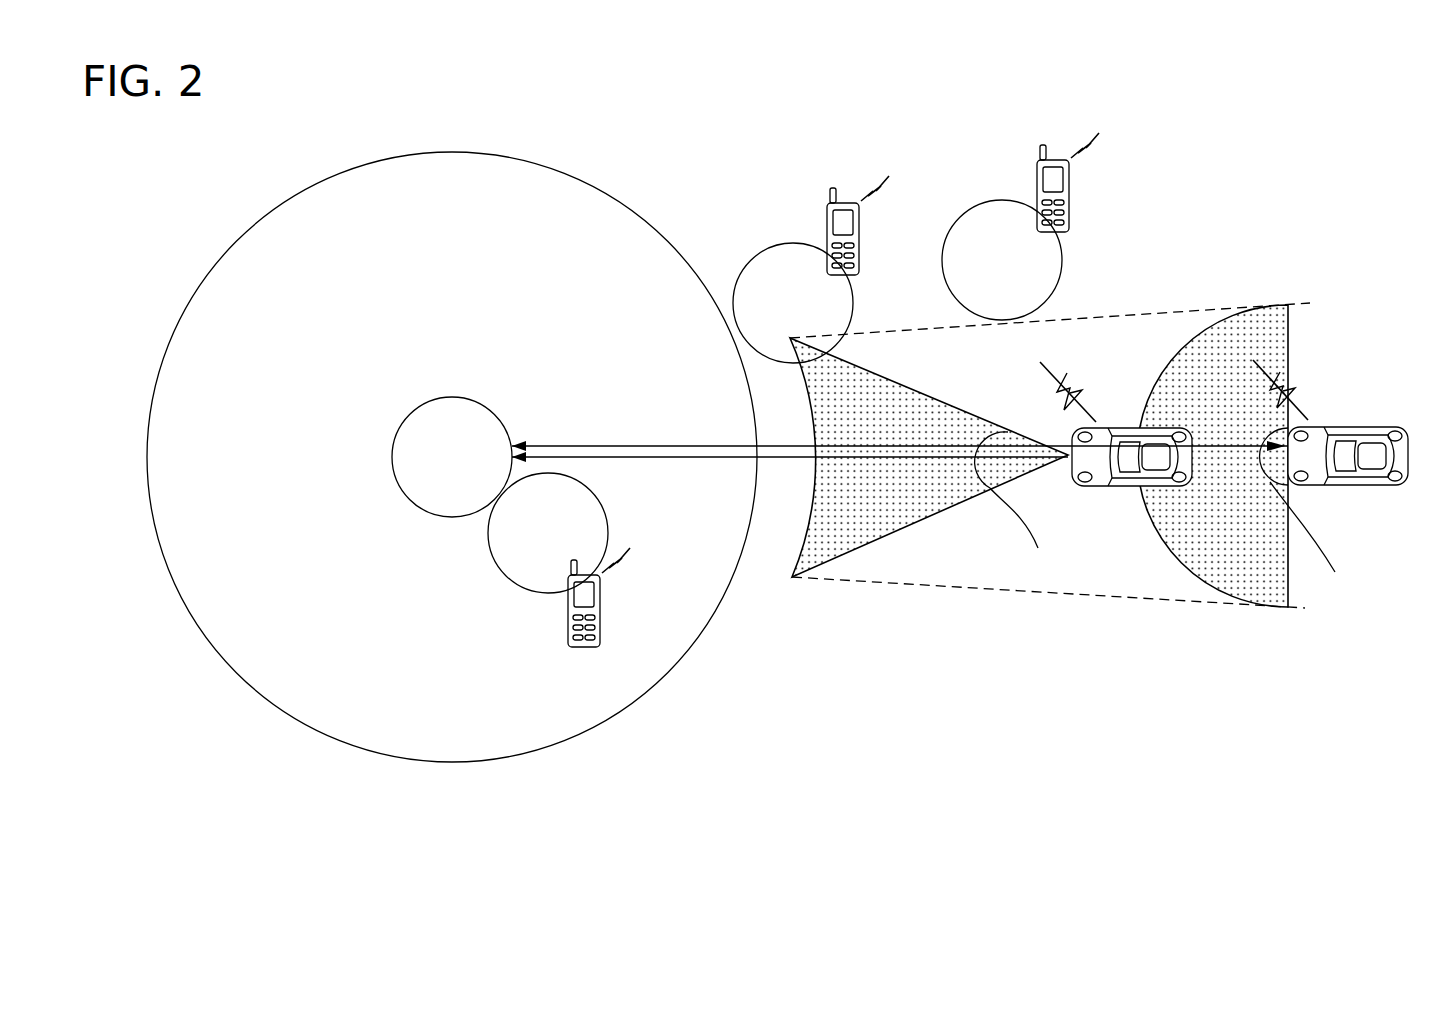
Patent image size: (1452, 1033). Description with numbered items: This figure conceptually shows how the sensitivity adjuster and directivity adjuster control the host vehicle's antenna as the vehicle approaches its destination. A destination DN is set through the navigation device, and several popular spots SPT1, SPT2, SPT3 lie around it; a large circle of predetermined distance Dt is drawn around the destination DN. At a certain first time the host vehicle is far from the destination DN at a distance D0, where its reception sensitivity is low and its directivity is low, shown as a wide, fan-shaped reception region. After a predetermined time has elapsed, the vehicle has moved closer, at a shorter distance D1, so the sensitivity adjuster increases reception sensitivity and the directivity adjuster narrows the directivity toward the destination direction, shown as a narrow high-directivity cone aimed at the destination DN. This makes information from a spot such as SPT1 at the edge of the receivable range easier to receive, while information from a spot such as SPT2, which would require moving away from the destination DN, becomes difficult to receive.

The destination DN is at (449, 397).
The predetermined distance Dt is at (398, 485).
The distance at time t1 D1 is at (903, 460).
The distance at time t0 D0 is at (1228, 448).
The spot SPT1 is at (811, 269).
The spot SPT2 is at (1020, 226).
The spot SPT3 is at (559, 560).